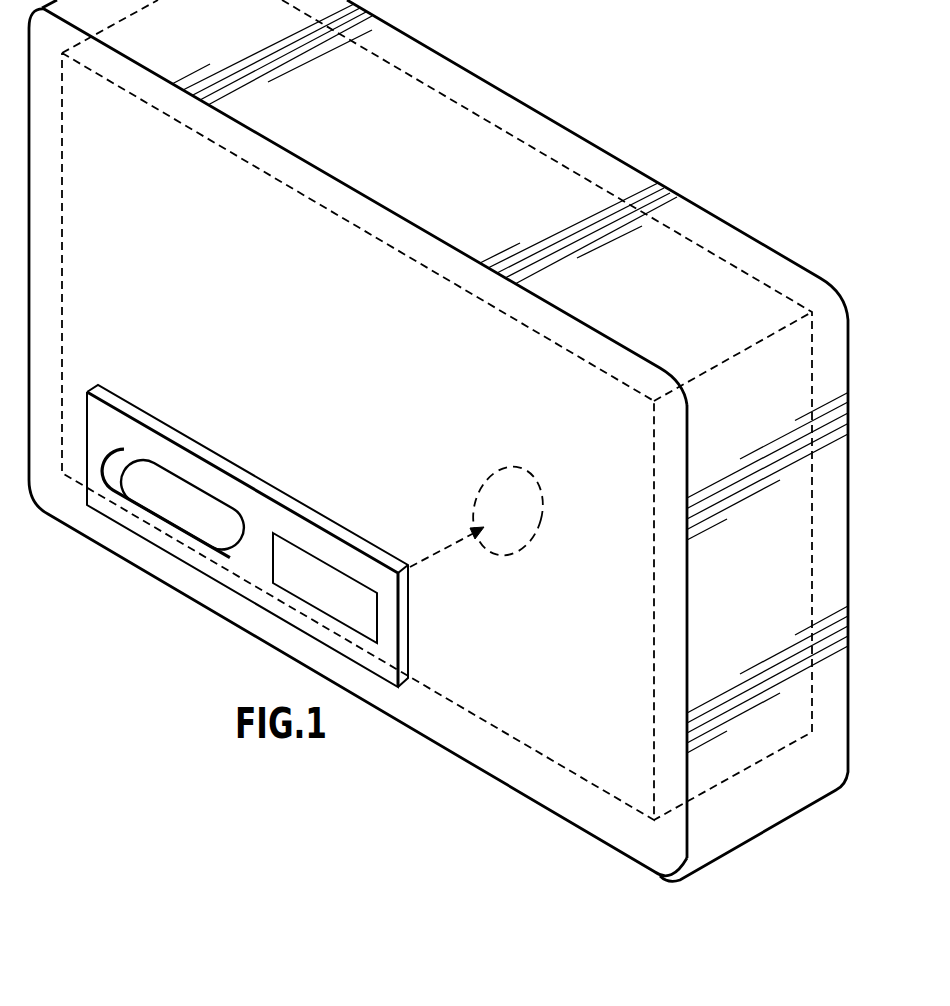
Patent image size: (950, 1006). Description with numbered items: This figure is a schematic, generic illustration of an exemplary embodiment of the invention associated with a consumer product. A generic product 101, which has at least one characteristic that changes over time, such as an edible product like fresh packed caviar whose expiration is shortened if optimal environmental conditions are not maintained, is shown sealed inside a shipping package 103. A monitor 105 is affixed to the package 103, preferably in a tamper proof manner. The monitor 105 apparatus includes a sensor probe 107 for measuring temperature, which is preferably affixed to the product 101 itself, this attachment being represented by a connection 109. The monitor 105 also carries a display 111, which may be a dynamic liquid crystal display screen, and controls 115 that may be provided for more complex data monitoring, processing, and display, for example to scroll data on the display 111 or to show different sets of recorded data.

The product 101 is at (571, 755).
The shipping package 103 is at (462, 740).
The monitor 105 is at (260, 587).
The sensor probe 107 is at (440, 550).
The connection 109 is at (528, 493).
The display 111 is at (180, 472).
The controls 115 is at (312, 553).